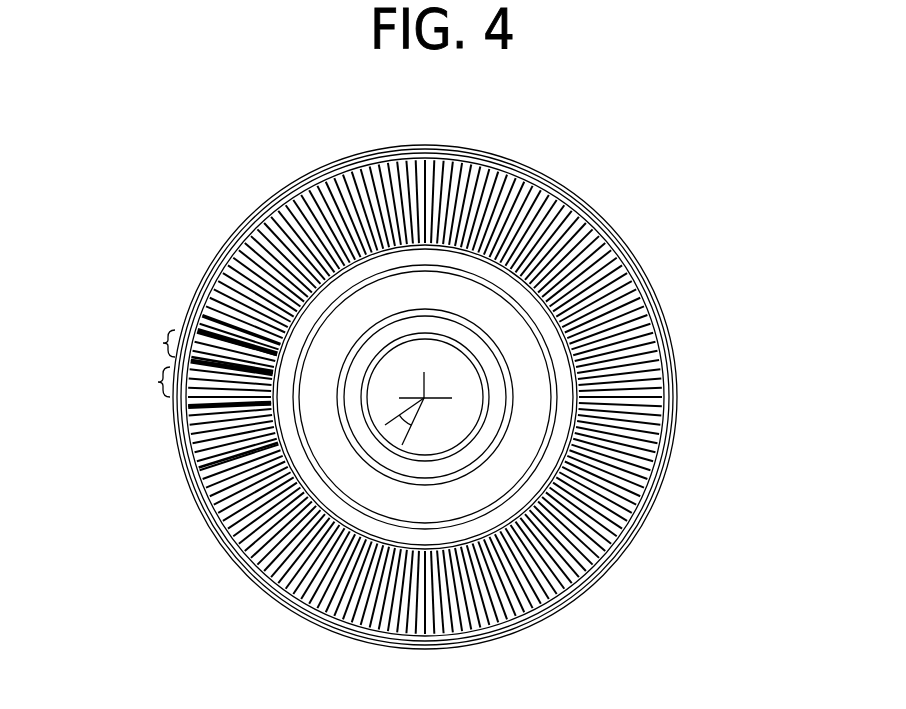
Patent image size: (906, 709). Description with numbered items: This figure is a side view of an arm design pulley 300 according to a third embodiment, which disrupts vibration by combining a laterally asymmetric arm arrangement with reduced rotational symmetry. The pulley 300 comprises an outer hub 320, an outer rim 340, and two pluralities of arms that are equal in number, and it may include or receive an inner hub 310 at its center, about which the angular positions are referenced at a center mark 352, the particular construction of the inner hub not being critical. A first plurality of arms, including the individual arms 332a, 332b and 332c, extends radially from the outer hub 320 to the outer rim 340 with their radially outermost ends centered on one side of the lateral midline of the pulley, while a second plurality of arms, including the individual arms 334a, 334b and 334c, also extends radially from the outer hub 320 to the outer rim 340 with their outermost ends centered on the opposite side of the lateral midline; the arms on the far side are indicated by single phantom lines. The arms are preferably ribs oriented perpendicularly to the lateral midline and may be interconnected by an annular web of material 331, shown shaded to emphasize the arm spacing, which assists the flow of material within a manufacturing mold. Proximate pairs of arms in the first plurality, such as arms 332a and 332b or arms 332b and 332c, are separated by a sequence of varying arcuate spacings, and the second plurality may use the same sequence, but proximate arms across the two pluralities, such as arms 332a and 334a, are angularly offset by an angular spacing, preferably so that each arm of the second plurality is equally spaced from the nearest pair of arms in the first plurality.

The pulley 300 is at (160, 170).
The inner hub 310 is at (540, 397).
The outer hub 320 is at (553, 338).
The annular web of material 331 is at (575, 245).
The arm 332a is at (203, 332).
The arm 332b is at (203, 363).
The arm 332c is at (203, 406).
The arm 334a is at (245, 332).
The arm 334b is at (237, 365).
The arm 334c is at (203, 466).
The outer rim 340 is at (525, 178).
The rotation axis 352 is at (436, 381).